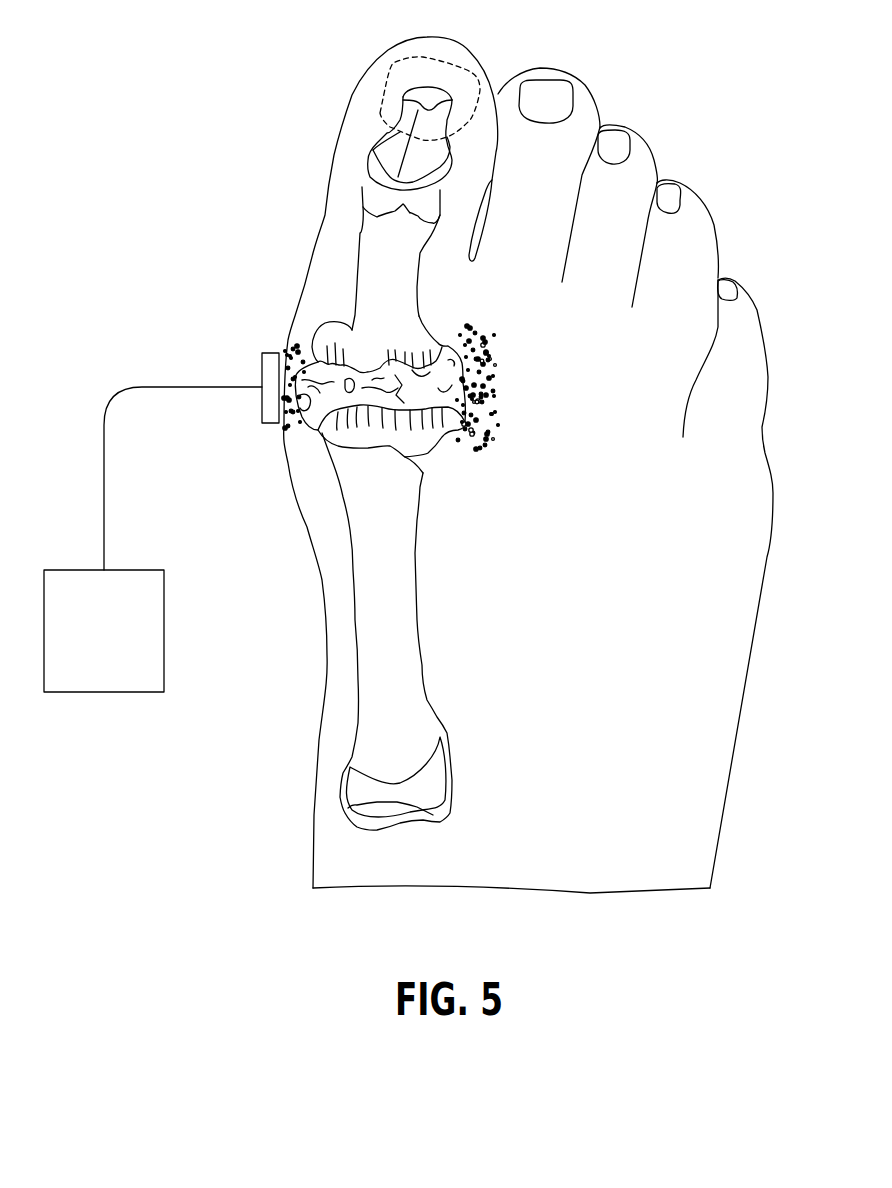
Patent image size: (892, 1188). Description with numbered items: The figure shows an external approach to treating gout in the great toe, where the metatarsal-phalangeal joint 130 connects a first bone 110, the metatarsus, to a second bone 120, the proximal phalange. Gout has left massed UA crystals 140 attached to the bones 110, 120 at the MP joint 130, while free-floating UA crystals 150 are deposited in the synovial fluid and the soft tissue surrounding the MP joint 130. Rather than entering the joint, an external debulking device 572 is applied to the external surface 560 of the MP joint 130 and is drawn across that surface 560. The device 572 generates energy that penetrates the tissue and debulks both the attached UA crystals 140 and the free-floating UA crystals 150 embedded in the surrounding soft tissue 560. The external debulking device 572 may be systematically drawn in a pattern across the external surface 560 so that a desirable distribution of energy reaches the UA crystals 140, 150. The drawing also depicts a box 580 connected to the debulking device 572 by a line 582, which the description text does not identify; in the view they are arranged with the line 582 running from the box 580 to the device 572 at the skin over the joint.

The first bone 110 is at (363, 573).
The second bone 120 is at (377, 233).
The metatarsal-phalangeal joint 130 is at (508, 333).
The massed UA crystals 140 is at (366, 370).
The free-floating UA crystals 150 is at (507, 379).
The external surface 560 is at (239, 386).
The external debulking device 572 is at (261, 371).
The control unit 580 is at (104, 694).
The lead wire 582 is at (104, 505).